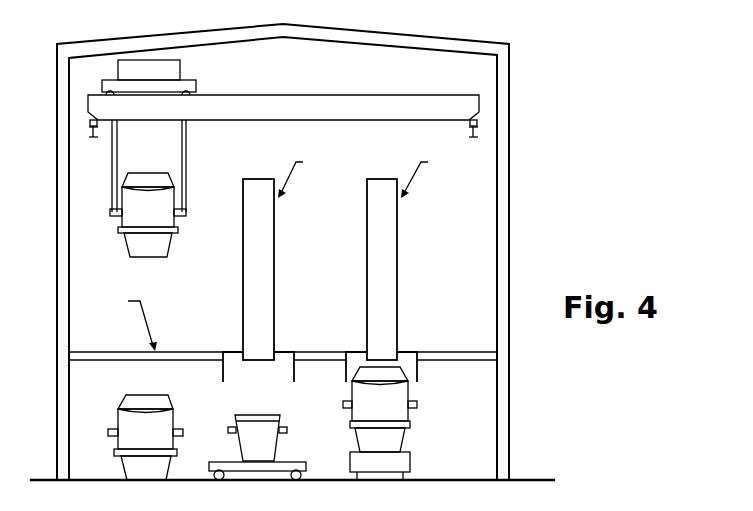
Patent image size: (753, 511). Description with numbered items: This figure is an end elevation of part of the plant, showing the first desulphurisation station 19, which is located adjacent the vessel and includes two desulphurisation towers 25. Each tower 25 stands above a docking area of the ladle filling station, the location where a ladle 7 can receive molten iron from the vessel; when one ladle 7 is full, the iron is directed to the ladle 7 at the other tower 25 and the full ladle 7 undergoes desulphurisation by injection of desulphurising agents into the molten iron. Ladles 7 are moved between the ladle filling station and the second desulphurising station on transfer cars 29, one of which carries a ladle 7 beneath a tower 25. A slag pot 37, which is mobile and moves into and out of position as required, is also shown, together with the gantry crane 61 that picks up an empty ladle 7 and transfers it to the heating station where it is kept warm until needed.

The gantry crane 61 is at (170, 70).
The ladle 7 is at (160, 248).
The desulphurisation tower 25 is at (360, 243).
The first desulphurisation station 19 is at (441, 263).
The slag pot 37 is at (258, 414).
The transfer car 29 is at (404, 458).